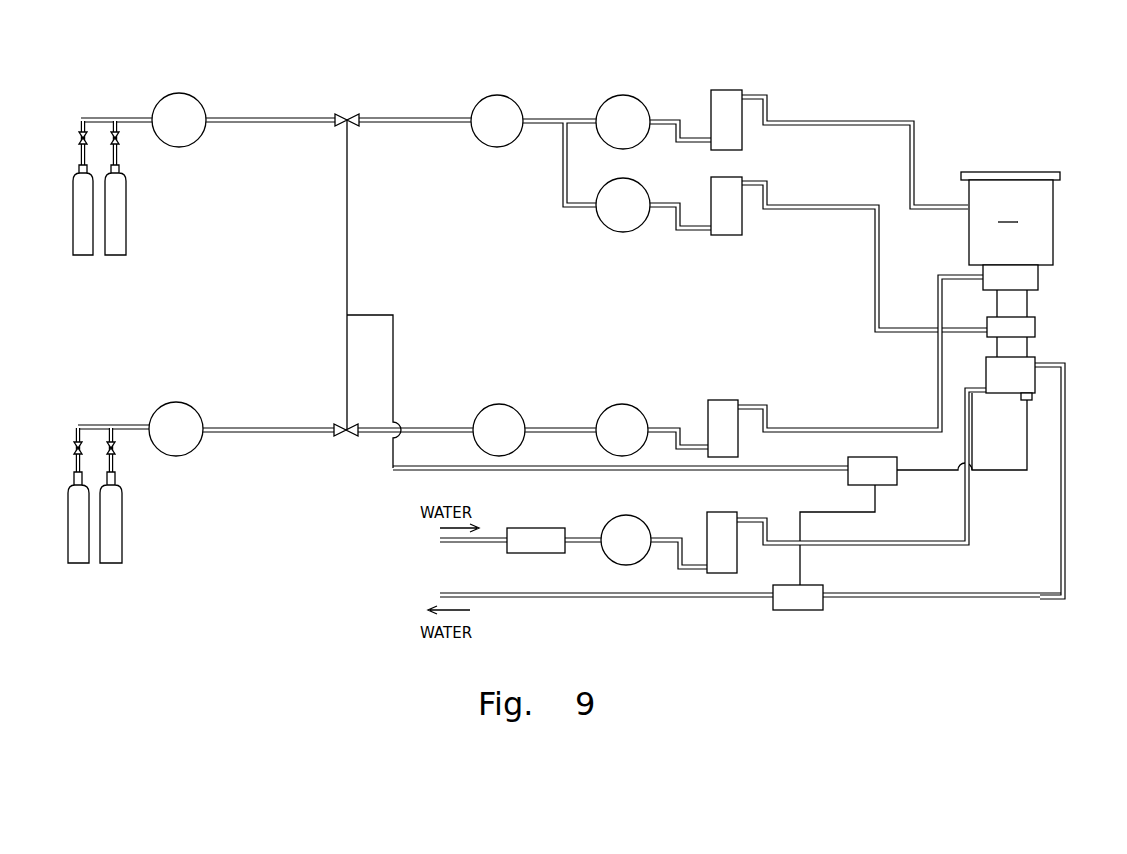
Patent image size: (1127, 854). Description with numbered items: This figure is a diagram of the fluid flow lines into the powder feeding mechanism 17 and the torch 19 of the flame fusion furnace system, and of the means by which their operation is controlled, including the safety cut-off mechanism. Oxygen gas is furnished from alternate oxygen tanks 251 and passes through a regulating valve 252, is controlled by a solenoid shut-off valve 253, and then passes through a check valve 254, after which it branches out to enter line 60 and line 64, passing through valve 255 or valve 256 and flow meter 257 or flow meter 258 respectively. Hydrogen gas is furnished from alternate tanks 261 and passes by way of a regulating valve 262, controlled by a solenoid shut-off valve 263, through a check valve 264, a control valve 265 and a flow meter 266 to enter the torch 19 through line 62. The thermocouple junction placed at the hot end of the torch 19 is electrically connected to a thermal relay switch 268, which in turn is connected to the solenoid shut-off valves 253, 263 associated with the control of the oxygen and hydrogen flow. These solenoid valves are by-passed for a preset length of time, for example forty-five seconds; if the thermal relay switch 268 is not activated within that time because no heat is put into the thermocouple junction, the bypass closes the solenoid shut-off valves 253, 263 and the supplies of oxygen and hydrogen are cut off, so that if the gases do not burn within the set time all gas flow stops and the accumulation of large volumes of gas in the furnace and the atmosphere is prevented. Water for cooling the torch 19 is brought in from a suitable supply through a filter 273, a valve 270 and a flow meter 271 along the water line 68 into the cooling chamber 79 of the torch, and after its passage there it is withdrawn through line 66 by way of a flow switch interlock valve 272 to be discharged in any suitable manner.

The powder feeding mechanism 17 is at (1010, 231).
The torch 19 is at (1020, 310).
The line 60 is at (913, 156).
The line 62 is at (937, 390).
The line 64 is at (877, 295).
The line 66 is at (1066, 500).
The water supply line 68 is at (970, 524).
The cooling jacket 79 is at (1027, 437).
The alternate oxygen tanks 251 is at (83, 253).
The regulating valve 252 is at (192, 103).
The solenoid shut-off valve 253 is at (349, 113).
The check valve 254 is at (505, 107).
The valve 255 is at (628, 105).
The valve 256 is at (632, 225).
The flow meter 257 is at (733, 97).
The flow meter 258 is at (735, 224).
The alternate tanks 261 is at (78, 558).
The regulating valve 262 is at (188, 415).
The solenoid shut-off valve 263 is at (350, 437).
The check valve 264 is at (503, 412).
The control valve 265 is at (625, 412).
The flow meter 266 is at (722, 412).
The thermal relay switch 268 is at (878, 479).
The valve 270 is at (630, 528).
The flow meter 271 is at (725, 523).
The flow switch interlock valve 272 is at (795, 607).
The filter 273 is at (540, 536).